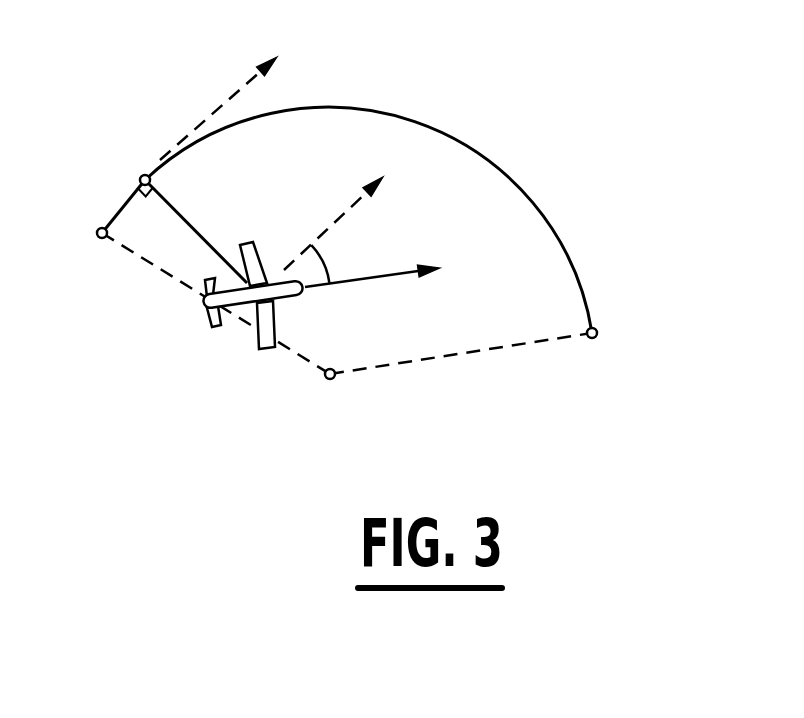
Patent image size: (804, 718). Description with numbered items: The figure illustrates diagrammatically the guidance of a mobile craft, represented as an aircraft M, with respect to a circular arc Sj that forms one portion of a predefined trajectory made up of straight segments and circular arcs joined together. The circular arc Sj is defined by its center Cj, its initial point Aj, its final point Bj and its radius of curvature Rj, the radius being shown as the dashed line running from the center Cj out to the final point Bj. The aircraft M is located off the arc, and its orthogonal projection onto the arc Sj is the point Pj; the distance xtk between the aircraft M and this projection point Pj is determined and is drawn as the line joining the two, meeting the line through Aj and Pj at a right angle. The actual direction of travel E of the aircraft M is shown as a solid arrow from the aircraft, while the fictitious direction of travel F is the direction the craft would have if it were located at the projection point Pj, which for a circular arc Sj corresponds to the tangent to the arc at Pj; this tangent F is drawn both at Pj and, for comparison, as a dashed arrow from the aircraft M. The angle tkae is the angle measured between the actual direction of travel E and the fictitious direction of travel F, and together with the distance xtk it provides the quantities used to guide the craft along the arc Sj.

The orthogonal projection point Pj is at (132, 170).
The initial point Aj is at (87, 253).
The final point Bj is at (604, 356).
The center Cj is at (343, 395).
The circular arc Sj is at (515, 180).
The radius of curvature Rj is at (474, 354).
The mobile craft M is at (238, 308).
The fictitious direction of travel F is at (250, 37).
The actual direction of travel E is at (428, 288).
The distance xtk is at (196, 231).
The angle tkae is at (348, 264).